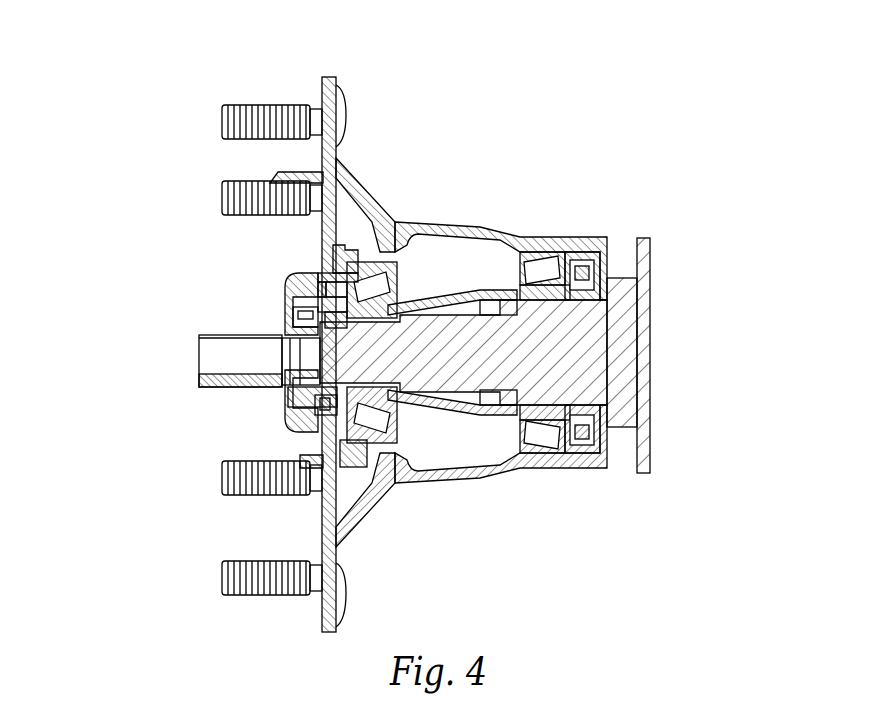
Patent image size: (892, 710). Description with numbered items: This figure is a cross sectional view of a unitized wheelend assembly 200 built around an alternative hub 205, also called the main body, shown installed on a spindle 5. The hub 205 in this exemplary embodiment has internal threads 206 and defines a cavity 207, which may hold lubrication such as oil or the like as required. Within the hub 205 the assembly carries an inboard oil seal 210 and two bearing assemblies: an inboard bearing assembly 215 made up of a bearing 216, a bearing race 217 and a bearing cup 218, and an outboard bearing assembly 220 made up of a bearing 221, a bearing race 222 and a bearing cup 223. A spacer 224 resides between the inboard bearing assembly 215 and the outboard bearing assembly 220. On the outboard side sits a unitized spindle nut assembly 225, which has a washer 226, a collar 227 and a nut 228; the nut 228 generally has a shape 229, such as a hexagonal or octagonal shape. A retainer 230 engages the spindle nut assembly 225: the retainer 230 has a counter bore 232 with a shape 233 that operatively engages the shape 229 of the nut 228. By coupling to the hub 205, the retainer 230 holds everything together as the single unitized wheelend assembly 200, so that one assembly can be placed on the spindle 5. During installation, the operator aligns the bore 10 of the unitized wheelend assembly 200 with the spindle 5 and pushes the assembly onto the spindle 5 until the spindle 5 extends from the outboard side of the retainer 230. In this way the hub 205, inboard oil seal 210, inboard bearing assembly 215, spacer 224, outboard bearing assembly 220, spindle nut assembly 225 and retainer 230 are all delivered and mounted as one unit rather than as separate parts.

The spindle 5 is at (615, 344).
The bore 10 is at (685, 237).
The unitized wheelend assembly 200 is at (175, 82).
The hub 205 is at (292, 300).
The internal threads 206 is at (262, 278).
The cavity 207 is at (489, 246).
The inboard oil seal 210 is at (598, 256).
The inboard bearing assembly 215 is at (568, 242).
The bearing 216 is at (646, 427).
The bearing race 217 is at (638, 392).
The bearing cup 218 is at (560, 462).
The outboard bearing assembly 220 is at (382, 252).
The bearing 221 is at (400, 488).
The bearing race 222 is at (367, 513).
The bearing cup 223 is at (433, 480).
The spacer 224 is at (515, 462).
The unitized spindle nut assembly 225 is at (297, 262).
The washer 226 is at (307, 437).
The collar 227 is at (275, 432).
The nut 228 is at (290, 395).
The shape 229 is at (253, 333).
The retainer 230 is at (282, 292).
The counter bore 232 is at (345, 258).
The shape 233 is at (300, 300).